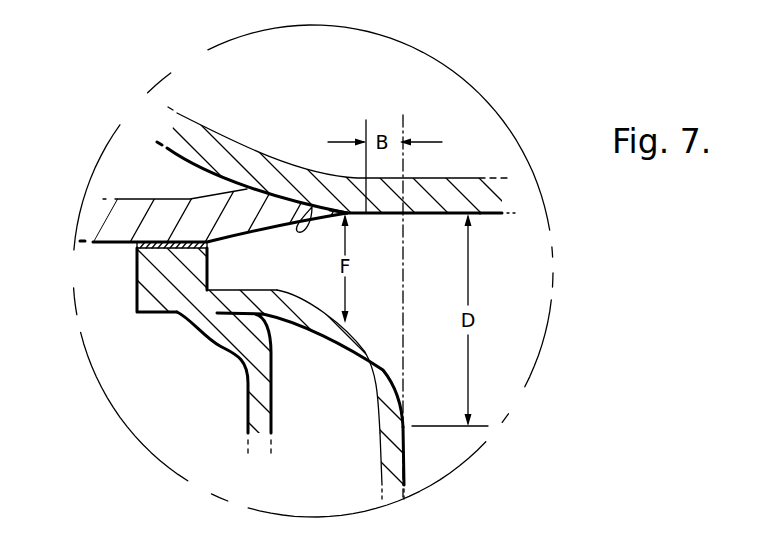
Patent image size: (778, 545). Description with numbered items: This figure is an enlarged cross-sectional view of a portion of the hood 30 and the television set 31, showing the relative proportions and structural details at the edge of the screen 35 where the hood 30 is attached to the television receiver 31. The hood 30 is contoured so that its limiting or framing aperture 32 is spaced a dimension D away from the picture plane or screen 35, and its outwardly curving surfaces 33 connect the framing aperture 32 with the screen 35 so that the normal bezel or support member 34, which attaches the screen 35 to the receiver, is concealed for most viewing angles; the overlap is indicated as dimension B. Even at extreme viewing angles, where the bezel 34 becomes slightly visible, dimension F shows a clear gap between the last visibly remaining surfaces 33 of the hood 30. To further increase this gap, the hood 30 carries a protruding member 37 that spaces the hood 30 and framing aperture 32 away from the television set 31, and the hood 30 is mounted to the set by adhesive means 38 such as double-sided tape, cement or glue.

The hood 30 is at (253, 402).
The television set 31 is at (100, 244).
The framing aperture 32 is at (405, 436).
The surfaces 33 is at (360, 336).
The bezel 34 is at (312, 207).
The screen 35 is at (496, 216).
The protruding member 37 is at (193, 282).
The adhesive means 38 is at (160, 250).